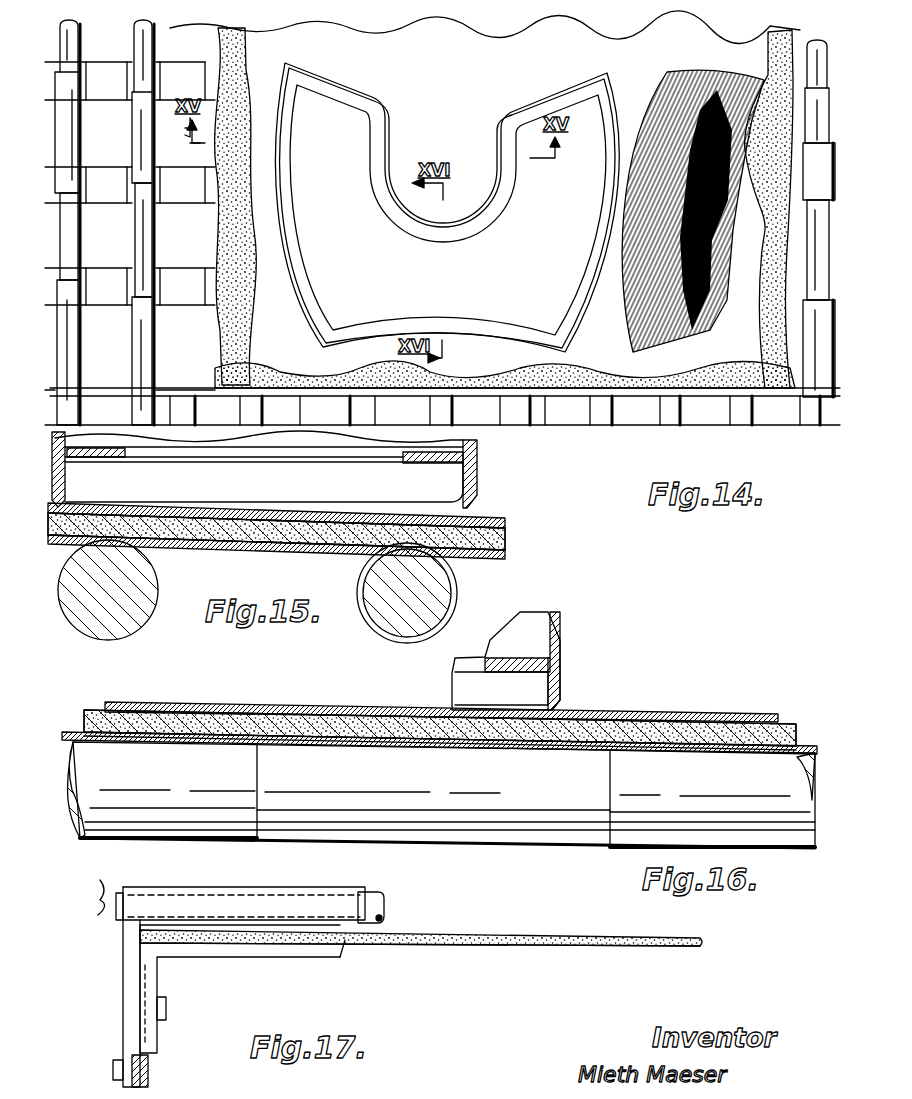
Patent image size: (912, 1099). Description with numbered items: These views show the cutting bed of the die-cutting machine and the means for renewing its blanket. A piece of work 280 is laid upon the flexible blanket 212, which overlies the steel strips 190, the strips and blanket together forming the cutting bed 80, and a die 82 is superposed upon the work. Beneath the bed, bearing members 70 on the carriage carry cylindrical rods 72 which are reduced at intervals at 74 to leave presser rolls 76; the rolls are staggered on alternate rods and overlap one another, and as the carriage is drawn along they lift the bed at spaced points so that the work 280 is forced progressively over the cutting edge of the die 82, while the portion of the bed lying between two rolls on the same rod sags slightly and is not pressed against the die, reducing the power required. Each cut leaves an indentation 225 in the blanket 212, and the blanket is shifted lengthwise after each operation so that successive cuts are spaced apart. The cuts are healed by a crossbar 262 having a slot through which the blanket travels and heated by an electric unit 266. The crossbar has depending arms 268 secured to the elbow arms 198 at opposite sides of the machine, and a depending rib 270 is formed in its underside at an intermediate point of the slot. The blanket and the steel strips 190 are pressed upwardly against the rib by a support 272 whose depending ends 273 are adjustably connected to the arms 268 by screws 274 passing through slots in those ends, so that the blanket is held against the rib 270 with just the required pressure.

In FIG. 14, the cylindrical rod 72 is at (90, 45).
In FIG. 16, the cylindrical rod 72 is at (77, 813).
In FIG. 14, the presser roll 76 is at (86, 357).
In FIG. 15, the presser roll 76 is at (137, 577).
In FIG. 16, the presser roll 76 is at (120, 840).
In FIG. 14, the bearing member 70 is at (90, 177).
In FIG. 14, the steel strip 190 is at (150, 222).
In FIG. 15, the steel strip 190 is at (293, 553).
In FIG. 16, the steel strip 190 is at (682, 748).
In FIG. 17, the steel strip 190 is at (638, 950).
In FIG. 14, the flexible blanket 212 is at (240, 72).
In FIG. 15, the flexible blanket 212 is at (267, 527).
In FIG. 16, the flexible blanket 212 is at (570, 727).
In FIG. 17, the flexible blanket 212 is at (507, 937).
In FIG. 14, the piece of work 280 is at (460, 86).
In FIG. 15, the piece of work 280 is at (185, 510).
In FIG. 16, the piece of work 280 is at (203, 710).
In FIG. 14, the die 82 is at (388, 335).
In FIG. 15, the die 82 is at (478, 476).
In FIG. 16, the die 82 is at (558, 642).
In FIG. 14, the indentation 225 is at (755, 85).
In FIG. 15, the reduced portion 74 is at (373, 580).
In FIG. 16, the reduced portion 74 is at (512, 827).
In FIG. 16, the cutting bed 80 is at (417, 742).
In FIG. 17, the crossbar 262 is at (163, 887).
In FIG. 17, the electric unit 266 is at (362, 900).
In FIG. 17, the depending rib 270 is at (382, 925).
In FIG. 17, the depending arm 268 is at (128, 995).
In FIG. 17, the depending end 273 is at (153, 978).
In FIG. 17, the support 272 is at (297, 958).
In FIG. 17, the screw 274 is at (166, 1005).
In FIG. 17, the elbow arm 198 is at (148, 1073).